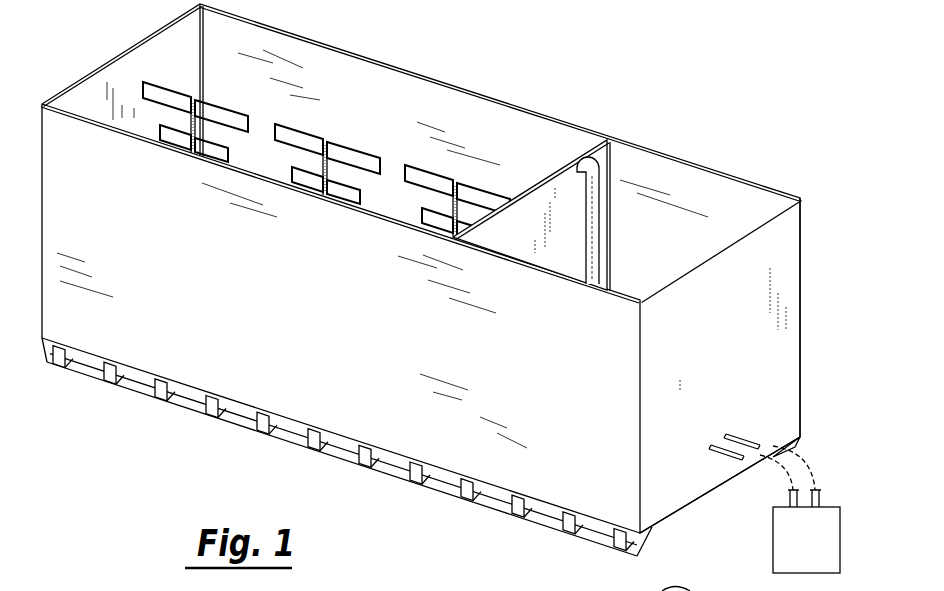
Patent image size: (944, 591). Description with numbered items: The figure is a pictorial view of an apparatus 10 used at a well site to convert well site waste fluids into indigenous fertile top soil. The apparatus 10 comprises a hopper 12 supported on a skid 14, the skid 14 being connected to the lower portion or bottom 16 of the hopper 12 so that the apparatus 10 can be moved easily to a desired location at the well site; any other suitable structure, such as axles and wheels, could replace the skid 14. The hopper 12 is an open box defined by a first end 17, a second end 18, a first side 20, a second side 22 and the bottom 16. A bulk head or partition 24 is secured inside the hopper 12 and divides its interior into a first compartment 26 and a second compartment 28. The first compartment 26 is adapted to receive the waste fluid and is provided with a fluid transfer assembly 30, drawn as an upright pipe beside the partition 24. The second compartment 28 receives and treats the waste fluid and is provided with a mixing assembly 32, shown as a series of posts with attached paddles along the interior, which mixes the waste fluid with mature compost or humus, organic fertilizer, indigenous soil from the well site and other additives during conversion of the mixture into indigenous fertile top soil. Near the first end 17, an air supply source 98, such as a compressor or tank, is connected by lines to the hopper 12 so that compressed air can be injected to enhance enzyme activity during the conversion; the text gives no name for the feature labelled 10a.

The apparatus 10 is at (677, 92).
The container bottom portion 10a is at (434, 590).
The hopper 12 is at (564, 115).
The skid 14 is at (236, 434).
The bottom 16 is at (138, 383).
The first end 17 is at (790, 282).
The second end 18 is at (127, 47).
The first side 20 is at (324, 339).
The second side 22 is at (472, 90).
The partition 24 is at (503, 232).
The first compartment 26 is at (717, 190).
The second compartment 28 is at (343, 66).
The fluid transfer assembly 30 is at (606, 197).
The mixing assembly 32 is at (350, 140).
The air supply source 98 is at (773, 532).